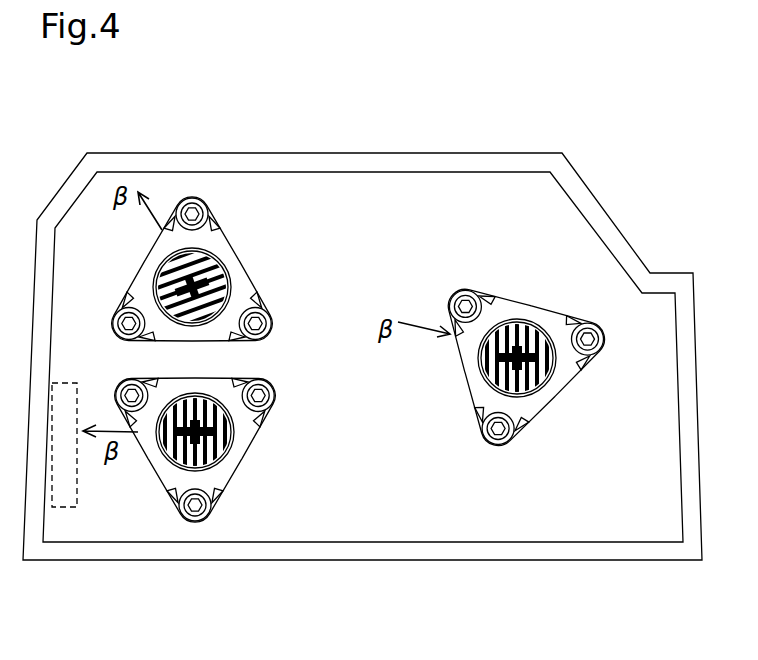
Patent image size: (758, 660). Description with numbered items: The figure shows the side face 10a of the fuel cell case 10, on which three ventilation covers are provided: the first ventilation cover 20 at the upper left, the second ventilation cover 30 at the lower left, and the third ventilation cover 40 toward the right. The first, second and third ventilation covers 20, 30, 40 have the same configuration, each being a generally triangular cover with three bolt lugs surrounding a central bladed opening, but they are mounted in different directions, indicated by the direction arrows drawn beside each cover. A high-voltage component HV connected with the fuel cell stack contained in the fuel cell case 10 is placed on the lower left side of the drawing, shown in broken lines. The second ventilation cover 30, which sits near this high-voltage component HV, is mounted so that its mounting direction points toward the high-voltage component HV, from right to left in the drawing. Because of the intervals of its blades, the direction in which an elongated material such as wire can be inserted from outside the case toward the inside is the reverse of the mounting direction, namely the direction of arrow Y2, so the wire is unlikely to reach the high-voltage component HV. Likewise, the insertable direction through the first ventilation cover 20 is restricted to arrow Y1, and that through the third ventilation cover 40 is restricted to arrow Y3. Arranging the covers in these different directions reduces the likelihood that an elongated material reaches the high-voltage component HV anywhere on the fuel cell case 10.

The fuel cell case 10 is at (492, 153).
The side face 10a is at (370, 193).
The first ventilation cover 20 is at (147, 256).
The second ventilation cover 30 is at (148, 468).
The third ventilation cover 40 is at (563, 400).
The arrow Y1 is at (230, 263).
The arrow Y2 is at (202, 463).
The arrow Y3 is at (483, 398).
The high-voltage component HV is at (60, 498).